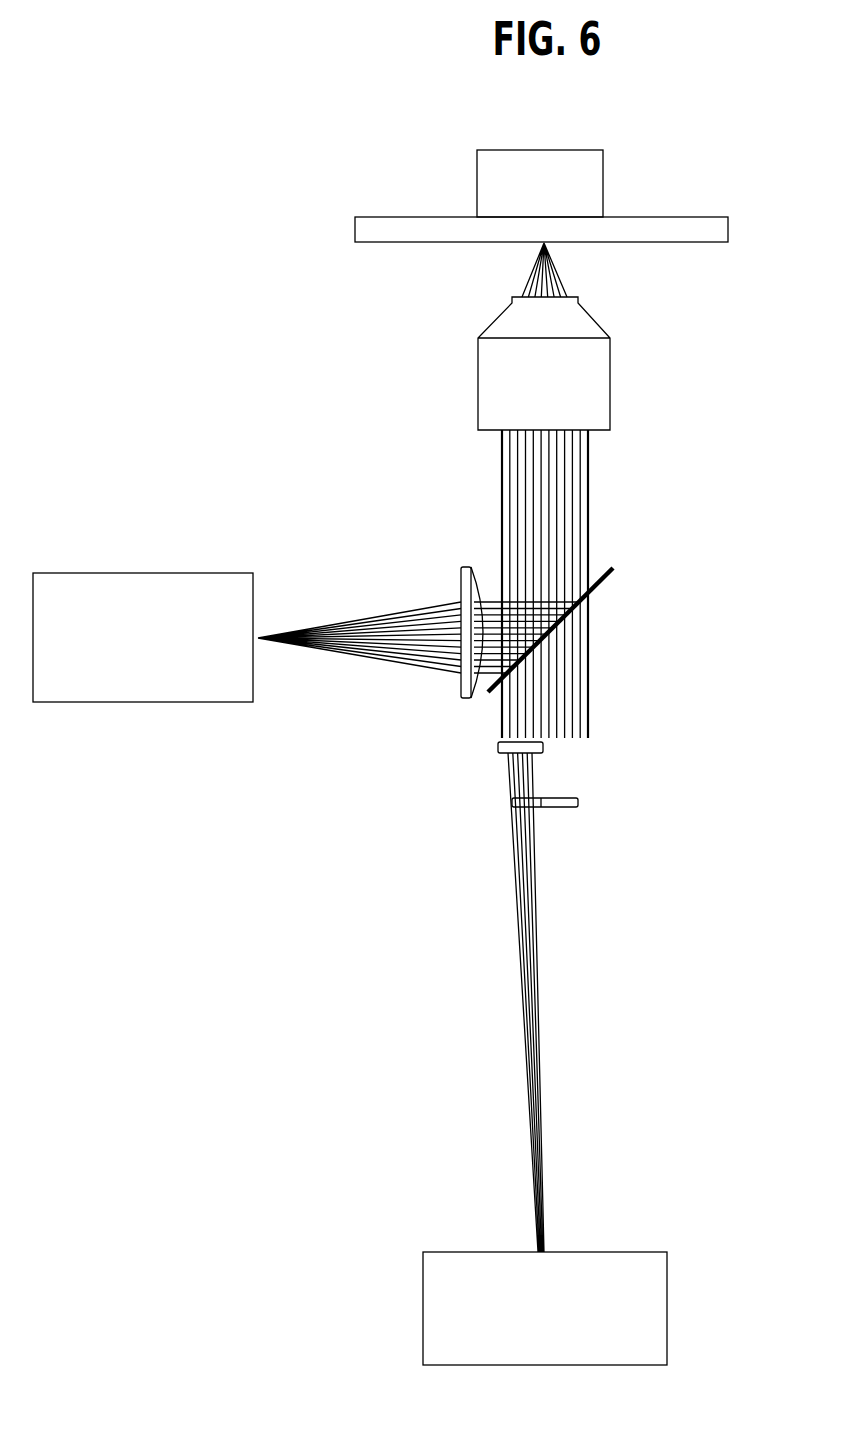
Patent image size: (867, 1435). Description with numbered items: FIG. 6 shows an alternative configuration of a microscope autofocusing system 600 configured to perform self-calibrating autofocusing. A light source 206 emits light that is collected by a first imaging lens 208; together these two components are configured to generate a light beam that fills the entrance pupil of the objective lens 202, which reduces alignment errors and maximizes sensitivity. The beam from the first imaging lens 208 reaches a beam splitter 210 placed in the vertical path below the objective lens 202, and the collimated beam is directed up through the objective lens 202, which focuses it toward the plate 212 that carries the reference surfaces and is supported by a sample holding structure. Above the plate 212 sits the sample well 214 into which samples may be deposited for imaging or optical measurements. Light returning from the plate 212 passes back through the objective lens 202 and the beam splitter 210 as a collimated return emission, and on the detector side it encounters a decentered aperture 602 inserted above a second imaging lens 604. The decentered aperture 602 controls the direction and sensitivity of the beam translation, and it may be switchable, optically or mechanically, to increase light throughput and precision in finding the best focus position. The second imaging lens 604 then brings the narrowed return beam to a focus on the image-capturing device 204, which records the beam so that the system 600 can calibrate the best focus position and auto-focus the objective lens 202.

The autofocusing system 600 is at (340, 445).
The objective lens 202 is at (610, 377).
The image-capturing device 204 is at (598, 1252).
The light source 206 is at (127, 702).
The first imaging lens 208 is at (462, 568).
The beam splitter 210 is at (605, 585).
The plate 212 is at (698, 217).
The sample well 214 is at (603, 183).
The decentered aperture 602 is at (490, 752).
The second imaging lens 604 is at (578, 804).